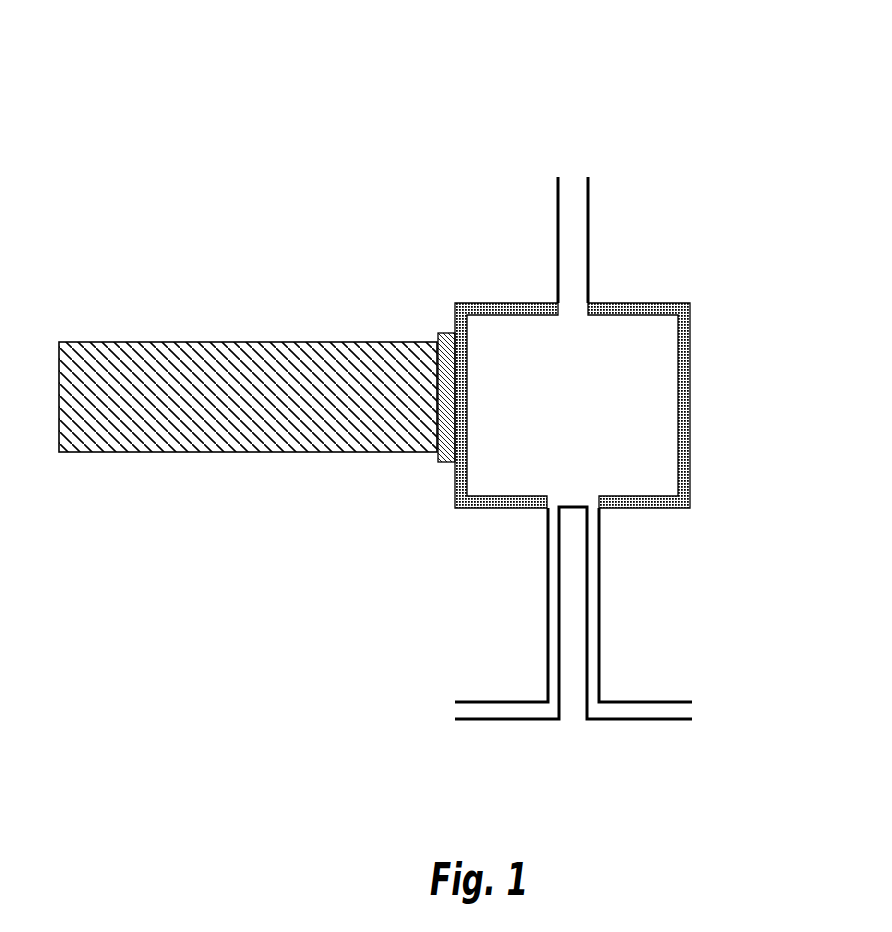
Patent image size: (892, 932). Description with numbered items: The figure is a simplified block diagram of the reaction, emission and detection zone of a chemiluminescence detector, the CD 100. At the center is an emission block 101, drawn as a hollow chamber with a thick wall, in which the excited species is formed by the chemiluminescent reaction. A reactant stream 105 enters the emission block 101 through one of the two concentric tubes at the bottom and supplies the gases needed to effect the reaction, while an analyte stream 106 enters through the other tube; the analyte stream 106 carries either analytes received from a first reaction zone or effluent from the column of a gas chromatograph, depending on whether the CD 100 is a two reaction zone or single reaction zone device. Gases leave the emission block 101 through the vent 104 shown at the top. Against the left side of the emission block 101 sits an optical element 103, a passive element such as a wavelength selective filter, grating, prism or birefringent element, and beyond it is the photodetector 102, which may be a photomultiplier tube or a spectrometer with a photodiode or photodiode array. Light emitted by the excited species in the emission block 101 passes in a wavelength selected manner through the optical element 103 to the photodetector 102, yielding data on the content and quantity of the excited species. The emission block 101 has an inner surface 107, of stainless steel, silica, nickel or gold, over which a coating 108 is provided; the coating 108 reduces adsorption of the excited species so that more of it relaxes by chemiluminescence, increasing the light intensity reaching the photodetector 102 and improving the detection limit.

The chemiluminescence detector (CD) 100 is at (429, 39).
The emission block 101 is at (634, 284).
The photodetector 102 is at (173, 464).
The optical element 103 is at (430, 467).
The vent 104 is at (572, 187).
The reactant stream 105 is at (694, 710).
The analyte stream 106 is at (452, 710).
The inner surface 107 is at (684, 433).
The coating 108 is at (472, 371).